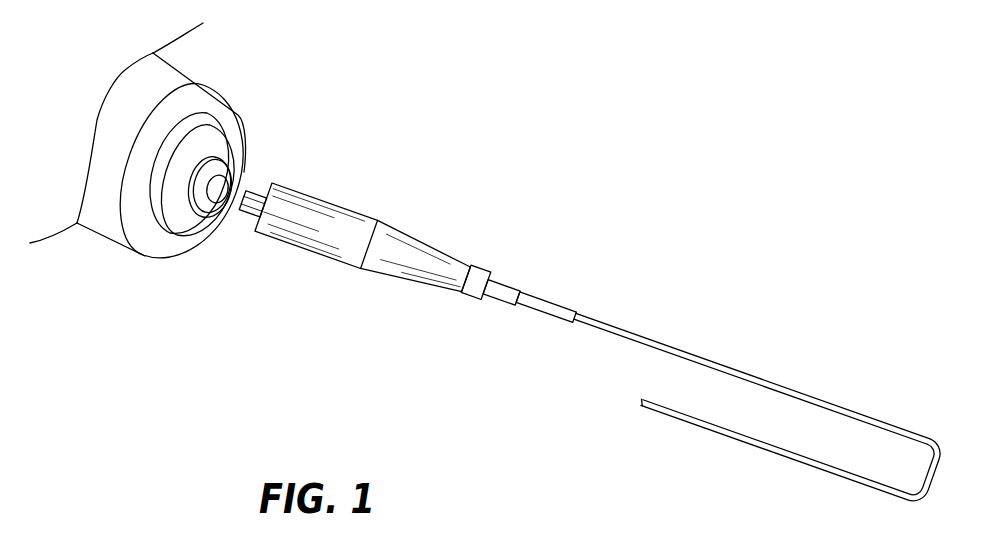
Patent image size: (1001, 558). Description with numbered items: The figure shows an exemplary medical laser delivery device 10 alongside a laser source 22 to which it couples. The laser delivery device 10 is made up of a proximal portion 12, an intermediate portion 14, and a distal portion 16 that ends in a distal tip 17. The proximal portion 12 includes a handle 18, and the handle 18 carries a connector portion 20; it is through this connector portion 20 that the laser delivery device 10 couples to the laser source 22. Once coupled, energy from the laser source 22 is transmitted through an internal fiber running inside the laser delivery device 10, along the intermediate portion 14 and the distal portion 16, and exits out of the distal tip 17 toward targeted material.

The laser delivery device 10 is at (707, 232).
The proximal portion 12 is at (310, 178).
The intermediate portion 14 is at (542, 293).
The distal portion 16 is at (730, 452).
The distal tip 17 is at (640, 402).
The handle 18 is at (328, 200).
The connector portion 20 is at (252, 216).
The laser source 22 is at (107, 262).